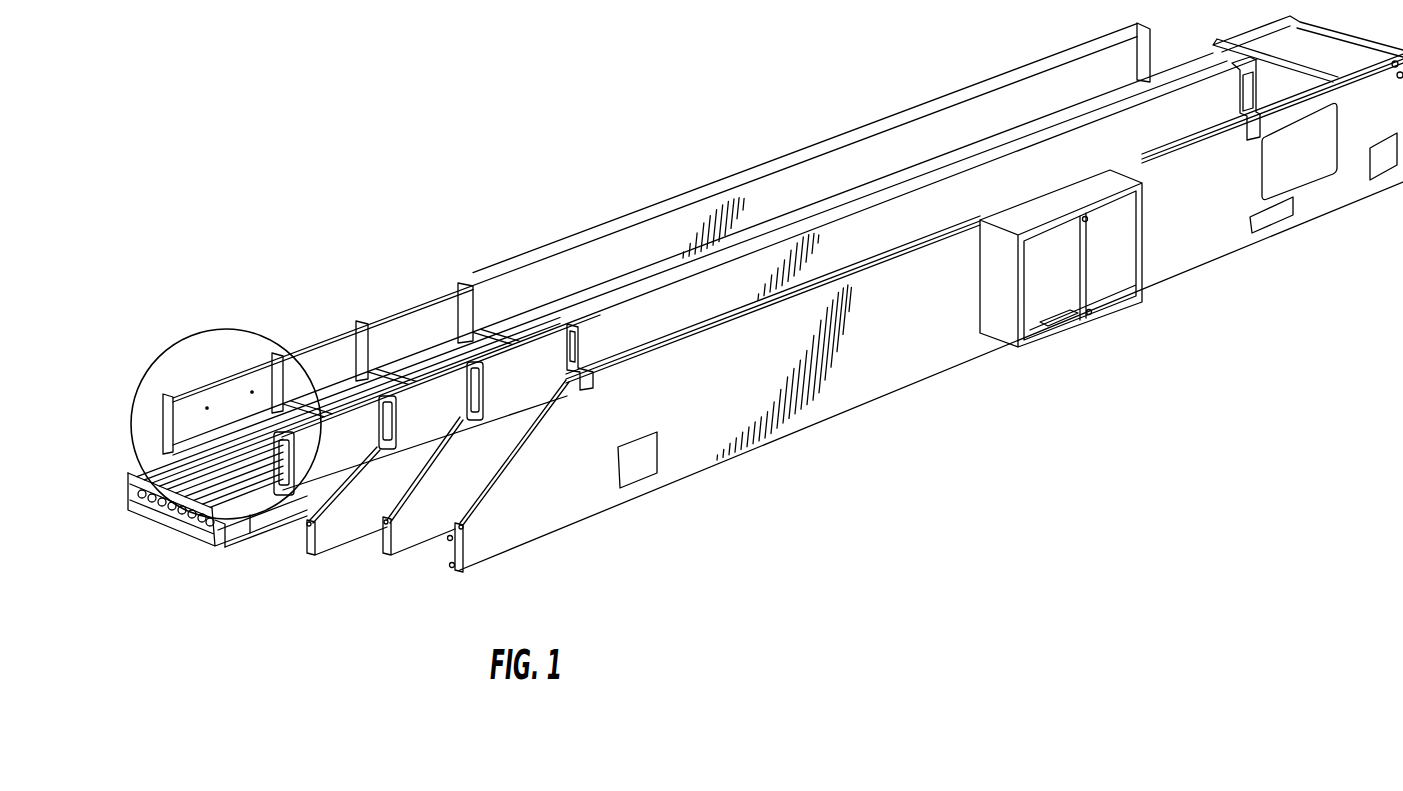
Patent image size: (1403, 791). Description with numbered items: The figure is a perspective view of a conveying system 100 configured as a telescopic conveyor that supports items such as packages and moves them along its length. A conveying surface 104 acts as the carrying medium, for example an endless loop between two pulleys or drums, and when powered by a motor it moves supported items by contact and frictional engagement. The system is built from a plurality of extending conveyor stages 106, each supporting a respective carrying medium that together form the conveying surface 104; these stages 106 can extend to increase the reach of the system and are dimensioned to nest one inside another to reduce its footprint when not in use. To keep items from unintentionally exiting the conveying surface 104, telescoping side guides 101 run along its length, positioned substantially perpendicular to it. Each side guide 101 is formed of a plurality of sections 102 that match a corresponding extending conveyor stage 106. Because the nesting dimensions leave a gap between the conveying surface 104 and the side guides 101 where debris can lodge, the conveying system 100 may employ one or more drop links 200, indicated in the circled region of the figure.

The conveying system 100 is at (745, 346).
The telescoping side guides 101 is at (788, 294).
The sections 102 is at (497, 253).
The conveying surface 104 is at (207, 478).
The extending conveyor stages 106 is at (433, 567).
The drop links 200 is at (193, 430).